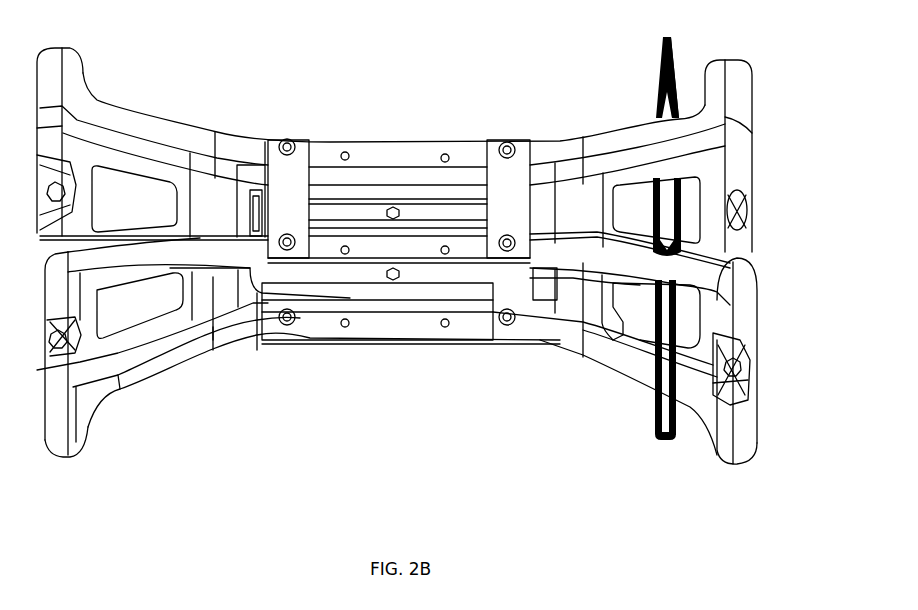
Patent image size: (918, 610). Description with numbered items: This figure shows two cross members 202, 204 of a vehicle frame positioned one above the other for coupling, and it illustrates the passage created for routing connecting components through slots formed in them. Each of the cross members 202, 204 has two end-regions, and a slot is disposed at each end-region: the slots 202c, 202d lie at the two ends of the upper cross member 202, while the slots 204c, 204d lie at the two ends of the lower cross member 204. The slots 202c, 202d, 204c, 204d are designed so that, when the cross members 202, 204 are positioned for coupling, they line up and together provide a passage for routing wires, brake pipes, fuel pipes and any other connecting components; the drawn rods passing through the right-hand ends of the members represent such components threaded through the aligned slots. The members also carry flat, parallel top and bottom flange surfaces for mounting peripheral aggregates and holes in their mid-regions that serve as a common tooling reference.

The cross member 202 is at (318, 156).
The cross member 204 is at (318, 338).
The slot 202c is at (688, 198).
The slot 202d is at (673, 77).
The slot 204c is at (680, 302).
The slot 204d is at (672, 357).